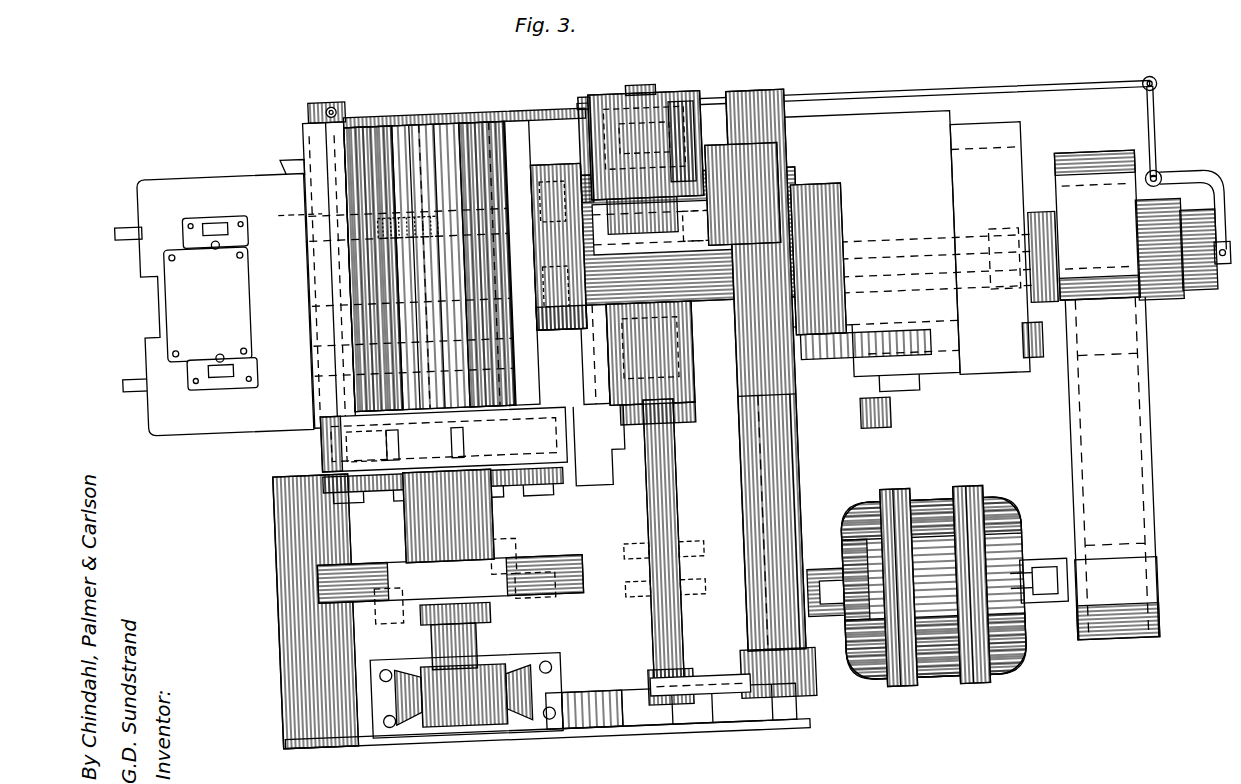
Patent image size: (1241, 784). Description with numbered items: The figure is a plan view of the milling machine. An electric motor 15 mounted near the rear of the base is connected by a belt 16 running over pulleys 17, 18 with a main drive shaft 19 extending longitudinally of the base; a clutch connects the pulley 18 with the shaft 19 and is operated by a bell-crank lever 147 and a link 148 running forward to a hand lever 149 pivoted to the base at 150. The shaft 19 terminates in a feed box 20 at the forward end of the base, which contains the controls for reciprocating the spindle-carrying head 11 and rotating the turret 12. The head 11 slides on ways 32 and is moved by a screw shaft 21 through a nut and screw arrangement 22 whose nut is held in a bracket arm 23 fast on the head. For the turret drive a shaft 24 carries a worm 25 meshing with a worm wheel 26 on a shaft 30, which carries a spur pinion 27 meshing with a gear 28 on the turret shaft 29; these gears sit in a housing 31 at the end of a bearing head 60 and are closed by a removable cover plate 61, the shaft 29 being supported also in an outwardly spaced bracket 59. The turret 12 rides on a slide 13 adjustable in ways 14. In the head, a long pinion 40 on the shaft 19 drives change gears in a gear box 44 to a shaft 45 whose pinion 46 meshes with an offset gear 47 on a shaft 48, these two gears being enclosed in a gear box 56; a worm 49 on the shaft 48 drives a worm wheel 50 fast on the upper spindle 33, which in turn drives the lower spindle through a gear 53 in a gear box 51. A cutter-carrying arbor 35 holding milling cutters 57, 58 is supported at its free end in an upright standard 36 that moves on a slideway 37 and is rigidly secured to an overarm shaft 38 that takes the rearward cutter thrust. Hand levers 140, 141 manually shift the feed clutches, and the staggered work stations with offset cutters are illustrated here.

The spindle-carrying head 11 is at (760, 210).
The turret 12 is at (525, 600).
The slide 13 is at (560, 385).
The ways 14 is at (585, 430).
The electric motor 15 is at (925, 685).
The belt 16 is at (1120, 486).
The pulley 17 is at (1120, 572).
The pulley 18 is at (1150, 332).
The main drive shaft 19 is at (1008, 245).
The feed box 20 is at (236, 157).
The screw shaft 21 is at (586, 300).
The nut and screw arrangement 22 is at (900, 342).
The bracket arm 23 is at (878, 434).
The shaft 24 is at (122, 212).
The worm 25 is at (470, 103).
The worm wheel 26 is at (405, 205).
The spur pinion 27 is at (470, 434).
The gear 28 is at (320, 440).
The turret shaft 29 is at (468, 630).
The shaft 30 is at (314, 333).
The housing 31 is at (376, 446).
The ways 32 is at (968, 160).
The upper cutter spindle 33 is at (693, 230).
The cutter-carrying arbor 35 is at (660, 460).
The upright standard 36 is at (700, 693).
The slideway 37 is at (590, 722).
The overarm shaft 38 is at (780, 98).
The pinion 40 is at (924, 247).
The gear box 44 is at (849, 205).
The shaft 45 is at (718, 228).
The pinion 46 is at (540, 250).
The gear 47 is at (550, 170).
The shaft 48 is at (600, 165).
The worm 49 is at (635, 225).
The worm wheel 50 is at (742, 92).
The gear box 51 is at (650, 82).
The gear 53 is at (695, 100).
The gear box 56 is at (548, 323).
The milling cutter 57 is at (690, 540).
The milling cutter 58 is at (690, 593).
The bracket 59 is at (448, 700).
The bearing head 60 is at (418, 113).
The cover plate 61 is at (330, 470).
The hand lever 140 is at (228, 369).
The hand lever 141 is at (232, 200).
The bell-crank lever 147 is at (1170, 165).
The link 148 is at (1023, 98).
The hand lever 149 is at (350, 92).
The pivot 150 is at (335, 87).